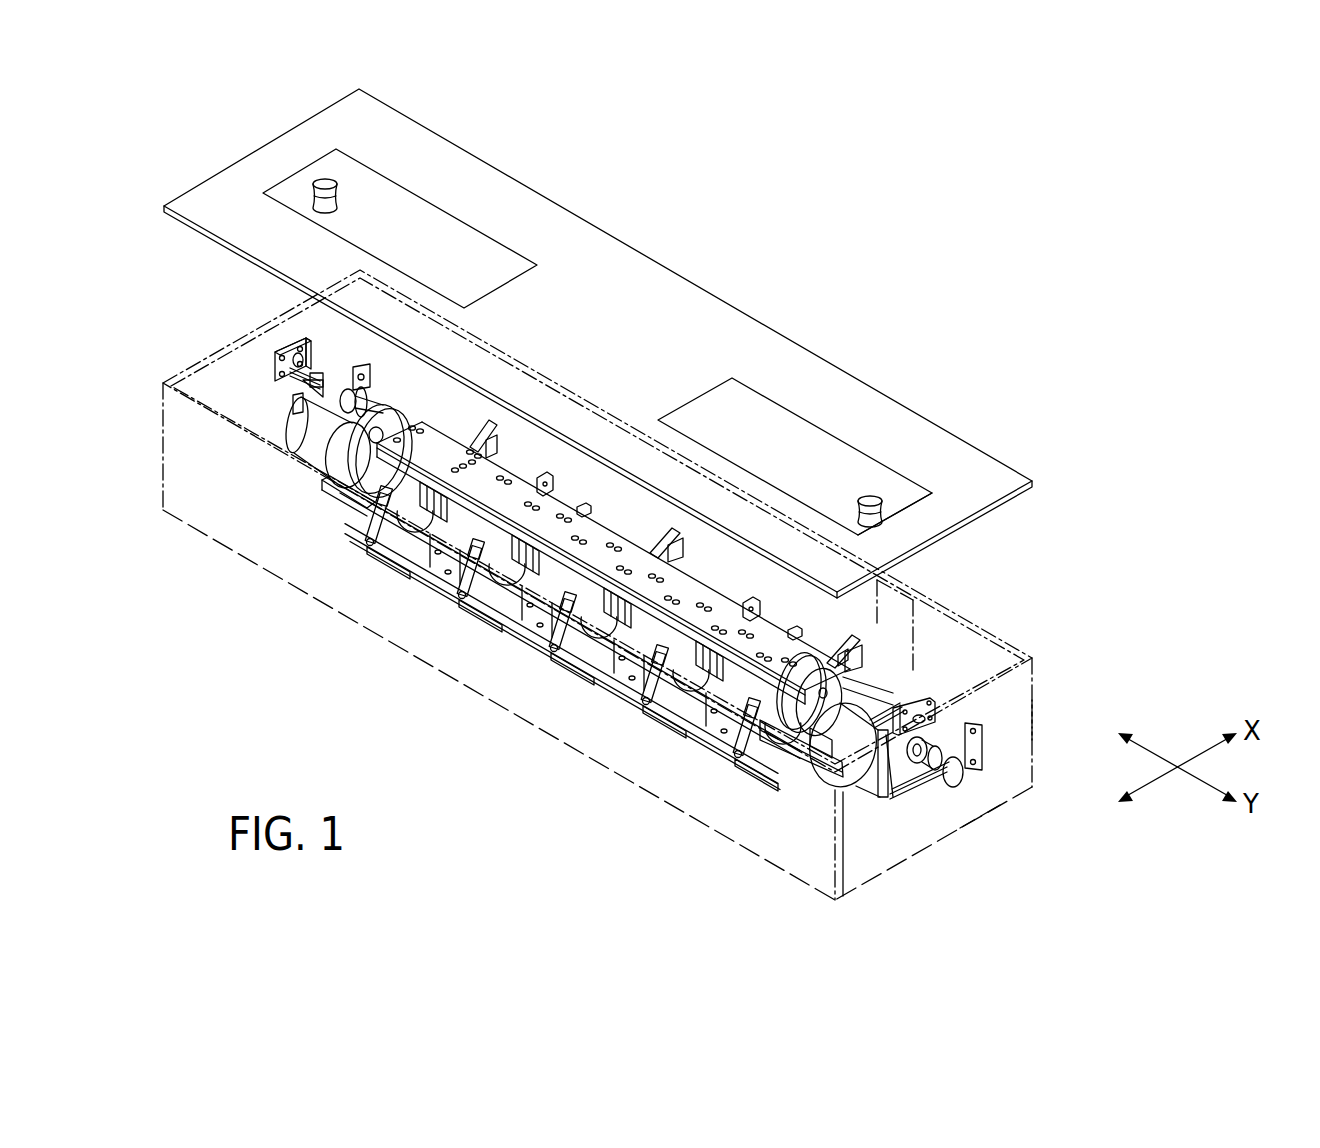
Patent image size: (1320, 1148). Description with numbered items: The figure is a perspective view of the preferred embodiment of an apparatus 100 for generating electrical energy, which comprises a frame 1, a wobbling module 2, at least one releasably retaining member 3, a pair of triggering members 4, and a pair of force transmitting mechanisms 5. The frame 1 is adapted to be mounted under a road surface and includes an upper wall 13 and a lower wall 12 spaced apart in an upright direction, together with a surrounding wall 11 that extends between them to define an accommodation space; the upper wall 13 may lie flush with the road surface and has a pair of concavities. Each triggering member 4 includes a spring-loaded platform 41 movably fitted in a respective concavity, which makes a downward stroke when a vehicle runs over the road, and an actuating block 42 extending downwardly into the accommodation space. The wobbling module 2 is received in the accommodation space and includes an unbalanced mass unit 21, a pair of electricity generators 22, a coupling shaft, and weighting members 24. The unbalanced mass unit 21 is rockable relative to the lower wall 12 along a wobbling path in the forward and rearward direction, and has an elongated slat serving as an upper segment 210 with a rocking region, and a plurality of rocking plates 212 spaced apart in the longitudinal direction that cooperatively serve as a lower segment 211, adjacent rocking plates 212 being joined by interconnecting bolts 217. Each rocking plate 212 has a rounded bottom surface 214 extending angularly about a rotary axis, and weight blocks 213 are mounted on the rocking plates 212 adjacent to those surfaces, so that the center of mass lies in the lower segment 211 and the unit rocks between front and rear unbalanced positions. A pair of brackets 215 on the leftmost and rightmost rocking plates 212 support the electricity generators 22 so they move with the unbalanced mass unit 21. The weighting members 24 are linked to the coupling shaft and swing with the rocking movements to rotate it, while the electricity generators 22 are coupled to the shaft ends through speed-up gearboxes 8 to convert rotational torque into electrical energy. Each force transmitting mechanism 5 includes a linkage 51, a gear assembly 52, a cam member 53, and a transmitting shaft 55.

The apparatus for generating electrical energy 100 is at (1018, 600).
The frame 1 is at (1035, 682).
The surrounding wall 11 is at (1033, 723).
The lower wall 12 is at (990, 810).
The upper wall 13 is at (843, 380).
The wobbling module 2 is at (705, 577).
The unbalanced mass unit 21 is at (436, 434).
The upper segment 210 is at (603, 538).
The lower segment 211 is at (547, 666).
The rocking plates 212 is at (470, 575).
The weight blocks 213 is at (438, 560).
The rounded bottom surface 214 is at (471, 615).
The brackets 215 is at (333, 497).
The interconnecting bolts 217 is at (700, 724).
The electricity generators 22 is at (330, 413).
The weighting members 24 is at (657, 642).
The releasably retaining member 3 is at (838, 657).
The triggering members 4 is at (474, 256).
The platform 41 is at (845, 465).
The actuating block 42 is at (912, 487).
The force transmitting mechanisms 5 is at (274, 389).
The linkage 51 is at (913, 797).
The gear assembly 52 is at (937, 736).
The cam member 53 is at (862, 663).
The transmitting shaft 55 is at (857, 687).
The speed-up gearboxes 8 is at (388, 407).